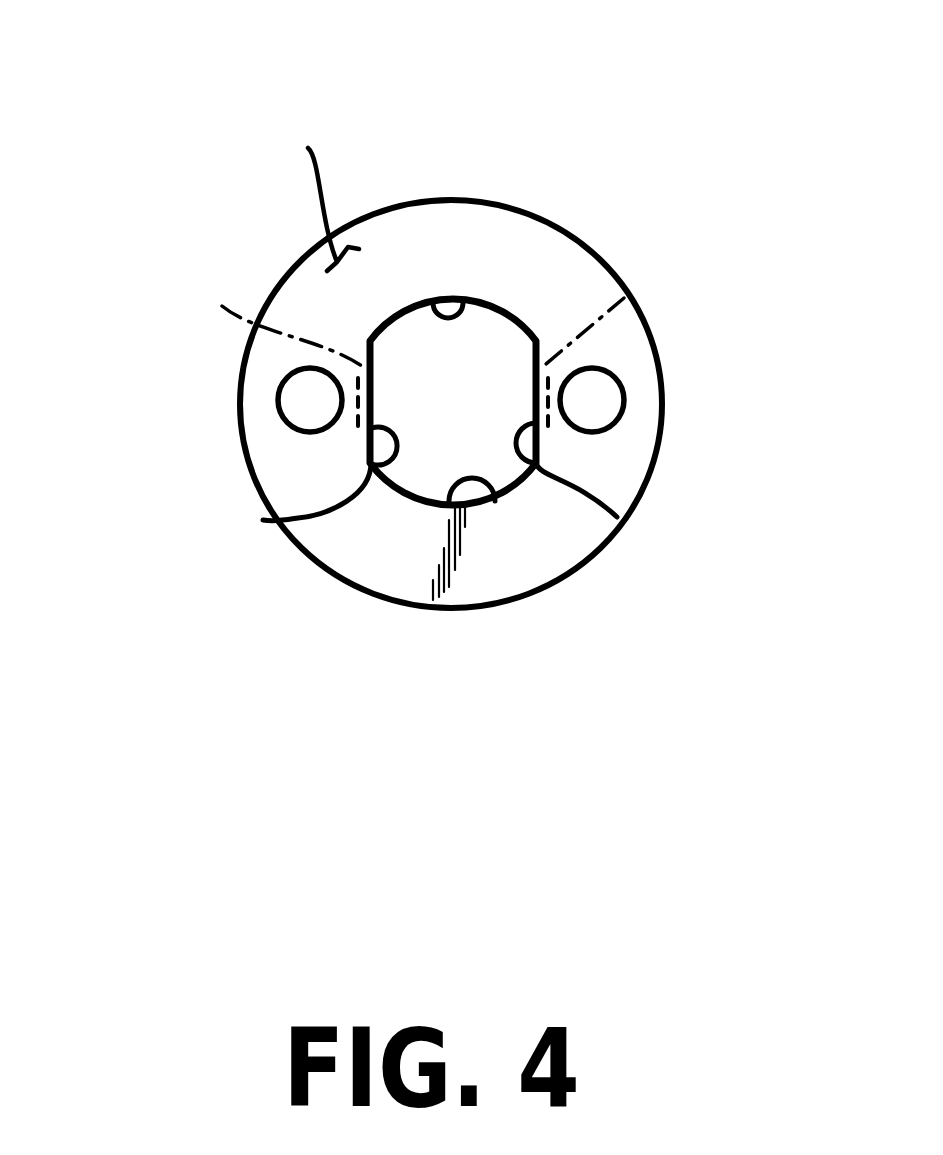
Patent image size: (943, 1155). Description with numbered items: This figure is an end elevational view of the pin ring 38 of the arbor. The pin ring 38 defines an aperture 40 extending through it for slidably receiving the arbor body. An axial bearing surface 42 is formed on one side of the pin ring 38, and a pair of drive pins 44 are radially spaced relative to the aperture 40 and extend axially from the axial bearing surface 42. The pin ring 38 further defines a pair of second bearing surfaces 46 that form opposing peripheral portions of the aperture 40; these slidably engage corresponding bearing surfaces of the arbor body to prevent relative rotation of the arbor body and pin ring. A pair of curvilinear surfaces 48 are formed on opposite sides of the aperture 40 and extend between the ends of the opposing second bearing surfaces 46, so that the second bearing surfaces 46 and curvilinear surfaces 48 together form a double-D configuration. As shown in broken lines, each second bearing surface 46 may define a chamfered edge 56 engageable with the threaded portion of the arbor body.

The pin ring 38 is at (508, 206).
The aperture 40 is at (438, 446).
The axial bearing surface 42 is at (298, 192).
The drive pins 44 is at (300, 393).
The second bearing surfaces 46 is at (263, 520).
The curvilinear surfaces 48 is at (443, 300).
The chamfered edge 56 is at (218, 302).